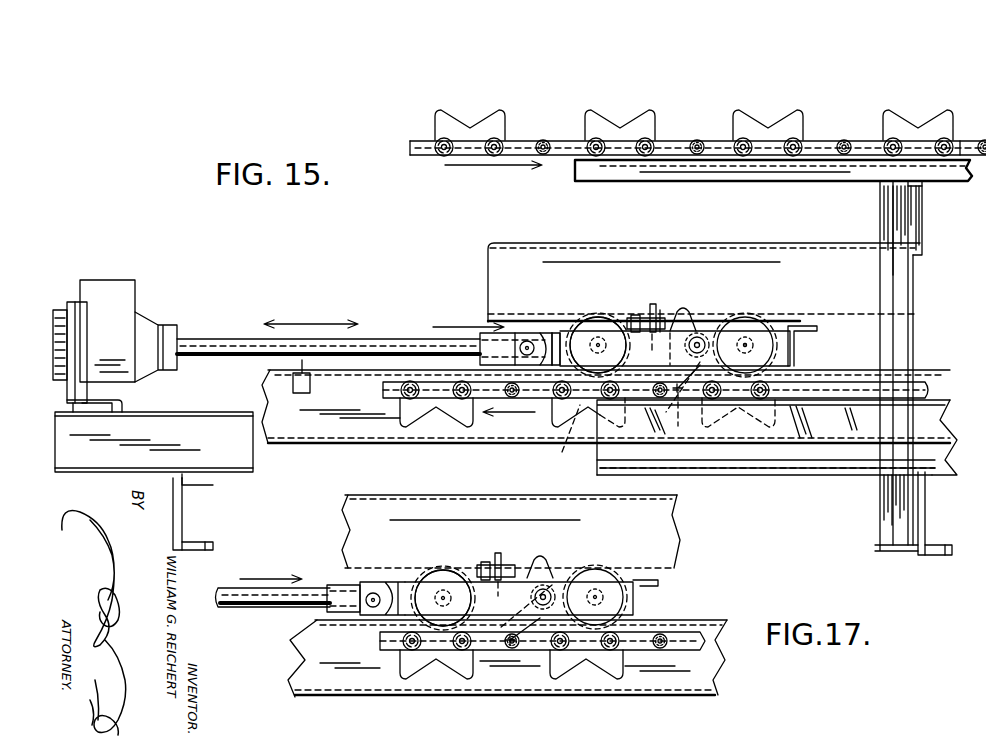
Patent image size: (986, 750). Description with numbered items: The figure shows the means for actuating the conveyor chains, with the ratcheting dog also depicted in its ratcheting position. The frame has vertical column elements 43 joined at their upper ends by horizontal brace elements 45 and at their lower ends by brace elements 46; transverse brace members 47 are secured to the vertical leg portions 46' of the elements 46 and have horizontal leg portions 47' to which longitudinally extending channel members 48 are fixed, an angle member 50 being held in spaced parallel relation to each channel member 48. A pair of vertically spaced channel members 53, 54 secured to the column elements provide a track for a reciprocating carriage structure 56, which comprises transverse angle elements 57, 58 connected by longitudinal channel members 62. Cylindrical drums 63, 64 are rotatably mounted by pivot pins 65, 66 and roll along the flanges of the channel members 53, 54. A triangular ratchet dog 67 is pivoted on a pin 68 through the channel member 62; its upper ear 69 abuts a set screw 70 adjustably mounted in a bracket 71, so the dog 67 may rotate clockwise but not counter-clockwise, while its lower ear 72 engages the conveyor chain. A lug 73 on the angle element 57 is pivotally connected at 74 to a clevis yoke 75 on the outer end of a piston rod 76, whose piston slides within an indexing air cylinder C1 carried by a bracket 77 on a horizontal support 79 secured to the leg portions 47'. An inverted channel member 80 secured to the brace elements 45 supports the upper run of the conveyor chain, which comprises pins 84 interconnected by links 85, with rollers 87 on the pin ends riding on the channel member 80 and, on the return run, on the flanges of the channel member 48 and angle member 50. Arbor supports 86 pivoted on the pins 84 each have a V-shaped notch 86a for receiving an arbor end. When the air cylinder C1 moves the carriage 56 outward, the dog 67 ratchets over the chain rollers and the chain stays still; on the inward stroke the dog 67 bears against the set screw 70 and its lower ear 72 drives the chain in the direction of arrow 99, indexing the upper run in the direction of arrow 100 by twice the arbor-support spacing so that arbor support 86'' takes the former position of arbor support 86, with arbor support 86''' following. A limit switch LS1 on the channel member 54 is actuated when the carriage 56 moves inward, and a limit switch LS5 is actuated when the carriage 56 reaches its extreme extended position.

In FIG. 15, the vertical column element 43 is at (890, 213).
In FIG. 15, the horizontal brace element 45 is at (918, 196).
In FIG. 15, the lower brace element 46 is at (200, 514).
In FIG. 15, the vertical leg portion 46' is at (936, 513).
In FIG. 15, the transverse brace member 47 is at (202, 492).
In FIG. 15, the horizontal leg portion 47' is at (218, 485).
In FIG. 15, the longitudinally extending channel member 48 is at (802, 472).
In FIG. 15, the angle member 50 is at (780, 452).
In FIG. 15, the upper channel member 53 is at (533, 251).
In FIG. 17, the upper channel member 53 is at (676, 556).
In FIG. 15, the lower channel member 54 is at (486, 428).
In FIG. 17, the lower channel member 54 is at (512, 686).
In FIG. 15, the carriage structure 56 is at (454, 330).
In FIG. 15, the transverse angle element 57 is at (540, 345).
In FIG. 15, the transverse angle element 58 is at (797, 341).
In FIG. 15, the longitudinal channel member 62 is at (626, 340).
In FIG. 17, the longitudinal channel member 62 is at (476, 587).
In FIG. 15, the cylindrical drum 63 is at (628, 352).
In FIG. 17, the cylindrical drum 63 is at (425, 580).
In FIG. 15, the cylindrical drum 64 is at (766, 332).
In FIG. 17, the cylindrical drum 64 is at (614, 575).
In FIG. 15, the pivot pin 65 is at (590, 343).
In FIG. 15, the pivot pin 66 is at (746, 343).
In FIG. 15, the ratchet dog 67 is at (690, 318).
In FIG. 17, the ratchet dog 67 is at (542, 566).
In FIG. 15, the pin 68 is at (700, 342).
In FIG. 15, the upper ear 69 is at (668, 318).
In FIG. 15, the set screw 70 is at (657, 314).
In FIG. 15, the bracket 71 is at (650, 316).
In FIG. 17, the bracket 71 is at (499, 562).
In FIG. 15, the lower ear 72 is at (683, 401).
In FIG. 15, the lug 73 is at (512, 333).
In FIG. 15, the pivotal connection 74 is at (528, 340).
In FIG. 15, the clevis yoke 75 is at (525, 345).
In FIG. 17, the clevis yoke 75 is at (366, 596).
In FIG. 15, the piston rod 76 is at (247, 340).
In FIG. 17, the piston rod 76 is at (248, 608).
In FIG. 15, the bracket 77 is at (68, 300).
In FIG. 15, the horizontal support 79 is at (180, 422).
In FIG. 15, the inverted channel member 80 is at (808, 166).
In FIG. 15, the pin 84 is at (892, 140).
In FIG. 15, the link 85 is at (812, 147).
In FIG. 15, the arbor support 86 is at (758, 93).
In FIG. 15, the arbor support 86'' is at (620, 91).
In FIG. 15, the arbor support 86''' is at (495, 90).
In FIG. 15, the V-shaped notch 86a is at (905, 113).
In FIG. 15, the roller 87 is at (962, 140).
In FIG. 15, the arrow 99 is at (505, 415).
In FIG. 15, the arrow 100 is at (479, 168).
In FIG. 15, the indexing air cylinder C1 is at (120, 330).
In FIG. 15, the limit switch LS1 is at (312, 388).
In FIG. 15, the limit switch LS5 is at (560, 439).